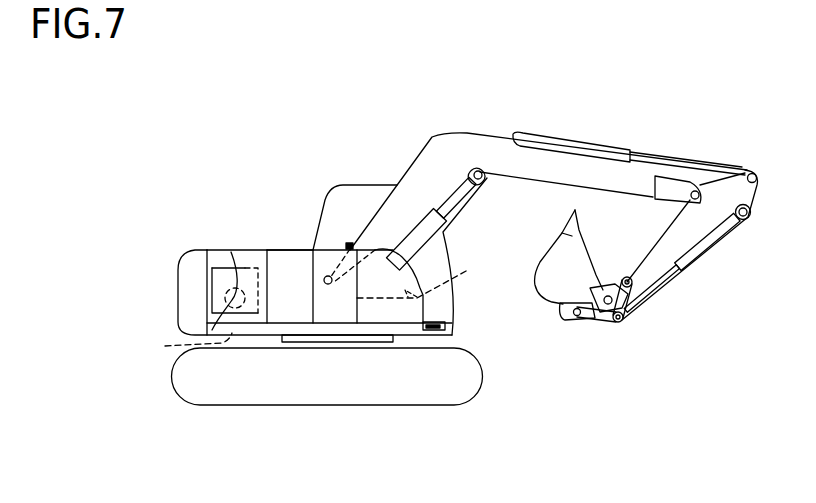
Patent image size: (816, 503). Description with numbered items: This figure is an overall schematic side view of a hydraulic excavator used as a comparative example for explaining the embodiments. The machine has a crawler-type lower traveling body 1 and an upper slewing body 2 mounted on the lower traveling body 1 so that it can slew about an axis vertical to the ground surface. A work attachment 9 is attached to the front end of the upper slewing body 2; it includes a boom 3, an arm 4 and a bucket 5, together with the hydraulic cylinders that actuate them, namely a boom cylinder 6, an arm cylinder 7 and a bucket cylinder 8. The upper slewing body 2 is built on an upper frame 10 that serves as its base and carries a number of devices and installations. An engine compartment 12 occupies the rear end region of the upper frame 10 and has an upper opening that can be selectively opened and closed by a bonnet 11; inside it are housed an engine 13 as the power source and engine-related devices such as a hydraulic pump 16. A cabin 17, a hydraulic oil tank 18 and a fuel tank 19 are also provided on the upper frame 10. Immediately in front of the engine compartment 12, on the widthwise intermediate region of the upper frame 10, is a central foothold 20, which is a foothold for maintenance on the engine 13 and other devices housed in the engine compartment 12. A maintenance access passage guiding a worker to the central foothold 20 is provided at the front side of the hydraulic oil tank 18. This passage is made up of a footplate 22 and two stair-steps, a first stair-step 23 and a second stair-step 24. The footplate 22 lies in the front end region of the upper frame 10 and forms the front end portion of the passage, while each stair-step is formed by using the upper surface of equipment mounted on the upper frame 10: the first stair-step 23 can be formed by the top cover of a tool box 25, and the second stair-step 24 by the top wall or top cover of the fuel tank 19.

The lower traveling body 1 is at (343, 405).
The upper slewing body 2 is at (307, 185).
The boom 3 is at (430, 152).
The arm 4 is at (690, 228).
The bucket 5 is at (551, 301).
The boom cylinder 6 is at (458, 206).
The arm cylinder 7 is at (596, 142).
The bucket cylinder 8 is at (693, 270).
The work attachment 9 is at (478, 131).
The upper frame 10 is at (244, 336).
The bonnet 11 is at (250, 248).
The engine compartment 12 is at (200, 257).
The engine 13 is at (212, 292).
The hydraulic pump 16 is at (178, 342).
The cabin 17 is at (350, 183).
The hydraulic oil tank 18 is at (294, 314).
The fuel tank 19 is at (339, 314).
The central foothold 20 is at (290, 248).
The footplate 22 is at (442, 322).
The first stair-step 23 is at (426, 276).
The second stair-step 24 is at (349, 242).
The tool box 25 is at (392, 318).